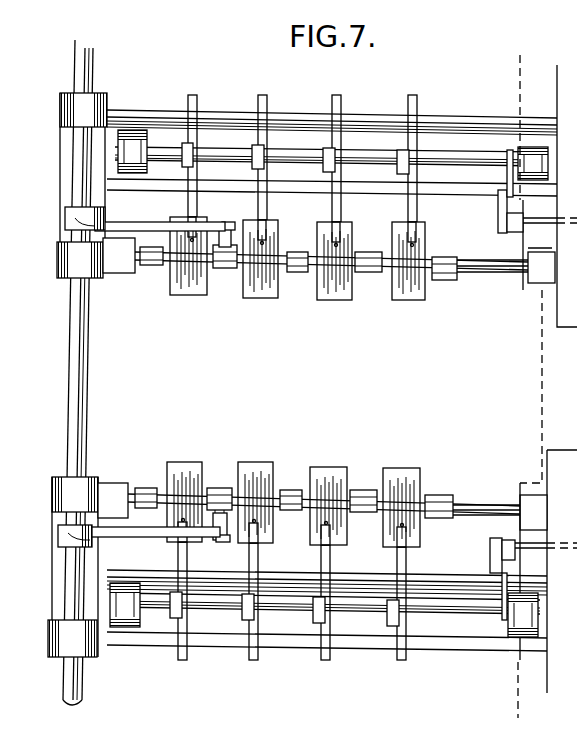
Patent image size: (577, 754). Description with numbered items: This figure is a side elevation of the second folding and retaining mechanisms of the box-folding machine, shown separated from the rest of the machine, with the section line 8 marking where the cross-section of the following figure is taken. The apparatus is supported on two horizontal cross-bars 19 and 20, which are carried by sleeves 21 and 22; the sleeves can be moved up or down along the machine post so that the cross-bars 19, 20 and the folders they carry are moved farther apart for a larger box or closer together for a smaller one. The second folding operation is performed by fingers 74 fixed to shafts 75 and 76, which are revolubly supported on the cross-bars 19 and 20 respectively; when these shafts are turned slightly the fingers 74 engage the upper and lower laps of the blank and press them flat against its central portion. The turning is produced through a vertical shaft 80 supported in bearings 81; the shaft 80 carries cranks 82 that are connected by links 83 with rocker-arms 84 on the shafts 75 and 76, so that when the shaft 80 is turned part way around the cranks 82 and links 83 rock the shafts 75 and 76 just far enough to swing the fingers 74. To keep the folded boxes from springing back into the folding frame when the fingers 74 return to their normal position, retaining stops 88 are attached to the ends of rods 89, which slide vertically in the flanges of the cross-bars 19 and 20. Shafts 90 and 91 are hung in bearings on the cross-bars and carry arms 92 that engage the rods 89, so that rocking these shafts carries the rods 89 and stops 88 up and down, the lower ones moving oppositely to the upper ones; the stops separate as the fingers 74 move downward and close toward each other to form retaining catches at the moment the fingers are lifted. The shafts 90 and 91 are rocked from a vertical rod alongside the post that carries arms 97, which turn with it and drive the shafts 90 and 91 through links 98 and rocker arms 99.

The section line 8— 8 is at (527, 387).
The horizontal cross-bar 19 is at (437, 140).
The horizontal cross-bar 20 is at (432, 628).
The sleeve 21 is at (567, 196).
The sleeve 22 is at (562, 571).
The fingers 74 is at (448, 282).
The shaft 75 is at (506, 275).
The shaft 76 is at (462, 505).
The vertical shaft 80 is at (78, 367).
The bearings 81 is at (75, 268).
The cranks 82 is at (160, 230).
The links 83 is at (240, 208).
The rocker-arms 84 is at (229, 268).
The retaining stops 88 is at (396, 300).
The rods 89 is at (336, 100).
The shaft 90 is at (236, 152).
The shaft 91 is at (289, 608).
The arms 92 is at (401, 178).
The arms 97 is at (558, 546).
The links 98 is at (498, 212).
The rocker arms 99 is at (505, 178).